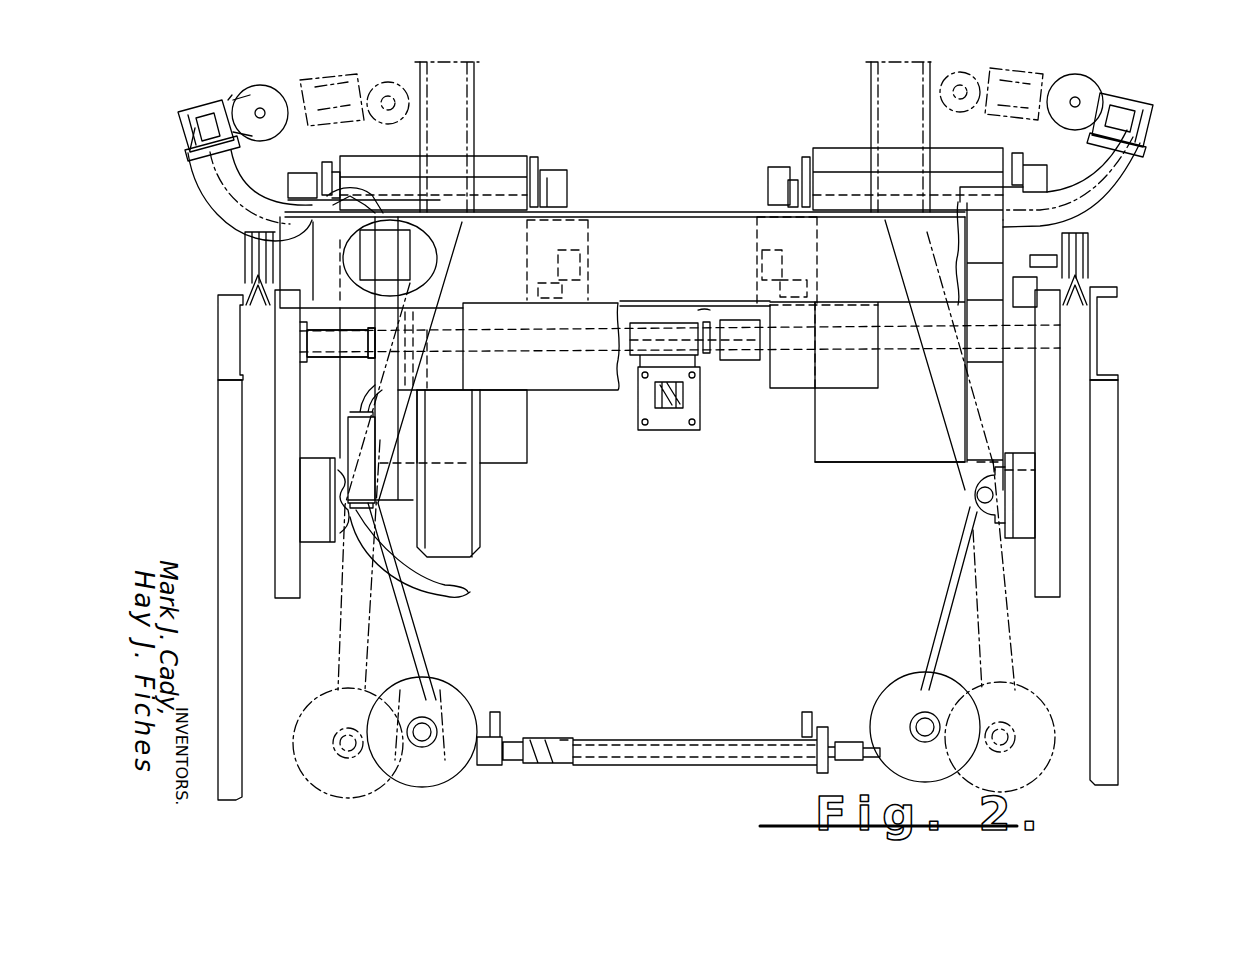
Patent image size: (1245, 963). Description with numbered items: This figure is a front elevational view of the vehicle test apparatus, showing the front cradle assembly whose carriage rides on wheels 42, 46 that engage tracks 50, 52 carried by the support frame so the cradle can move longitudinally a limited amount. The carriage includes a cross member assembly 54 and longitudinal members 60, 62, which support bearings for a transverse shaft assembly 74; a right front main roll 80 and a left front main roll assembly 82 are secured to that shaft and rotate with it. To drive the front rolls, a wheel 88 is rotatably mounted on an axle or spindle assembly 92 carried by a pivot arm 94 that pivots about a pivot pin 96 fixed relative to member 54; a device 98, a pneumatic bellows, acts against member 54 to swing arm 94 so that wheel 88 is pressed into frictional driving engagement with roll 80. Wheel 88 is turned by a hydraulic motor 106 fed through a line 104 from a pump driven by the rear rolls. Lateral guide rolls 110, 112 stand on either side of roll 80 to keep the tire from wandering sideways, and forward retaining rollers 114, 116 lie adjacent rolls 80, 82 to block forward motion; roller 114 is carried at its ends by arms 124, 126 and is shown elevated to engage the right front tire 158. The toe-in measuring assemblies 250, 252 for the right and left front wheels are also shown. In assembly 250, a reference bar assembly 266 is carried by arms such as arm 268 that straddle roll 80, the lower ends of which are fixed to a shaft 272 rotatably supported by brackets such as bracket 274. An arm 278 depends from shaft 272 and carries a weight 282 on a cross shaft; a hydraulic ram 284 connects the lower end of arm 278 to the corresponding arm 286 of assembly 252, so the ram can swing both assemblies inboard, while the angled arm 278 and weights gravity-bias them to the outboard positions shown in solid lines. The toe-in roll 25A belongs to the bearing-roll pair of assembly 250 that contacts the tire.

The roller 25A is at (250, 88).
The reference bar assembly 266 is at (176, 127).
The arm 268 is at (208, 169).
The toe-in measuring assembly 250 is at (212, 220).
The wheel 42 is at (245, 256).
The track 50 is at (236, 287).
The device 98 is at (346, 262).
The lateral guide roll 110 is at (288, 183).
The arm 124 is at (322, 162).
The right front tire 158 is at (458, 132).
The forward retaining roller 114 is at (500, 158).
The arm 126 is at (538, 160).
The lateral guide roll 112 is at (563, 185).
The cross member assembly 54 is at (681, 210).
The longitudinal member 60 is at (595, 244).
The longitudinal member 62 is at (755, 250).
The forward retaining roller 116 is at (828, 158).
The toe-in measuring assembly 252 is at (1142, 170).
The wheel 46 is at (1087, 243).
The track 52 is at (1093, 278).
The pivot pin 96 is at (372, 362).
The pivot arm 94 is at (375, 372).
The hydraulic motor 106 is at (353, 425).
The shaft 272 is at (345, 500).
The axle or spindle assembly 92 is at (407, 508).
The right front main roll 80 is at (517, 467).
The wheel 88 is at (460, 538).
The left front main roll assembly 82 is at (858, 469).
The transverse shaft assembly 74 is at (717, 364).
The line 104 is at (432, 595).
The arm 278 is at (402, 642).
The weight 282 is at (452, 702).
The hydraulic ram 284 is at (630, 733).
The arm 286 is at (950, 604).
The bracket 274 is at (340, 622).